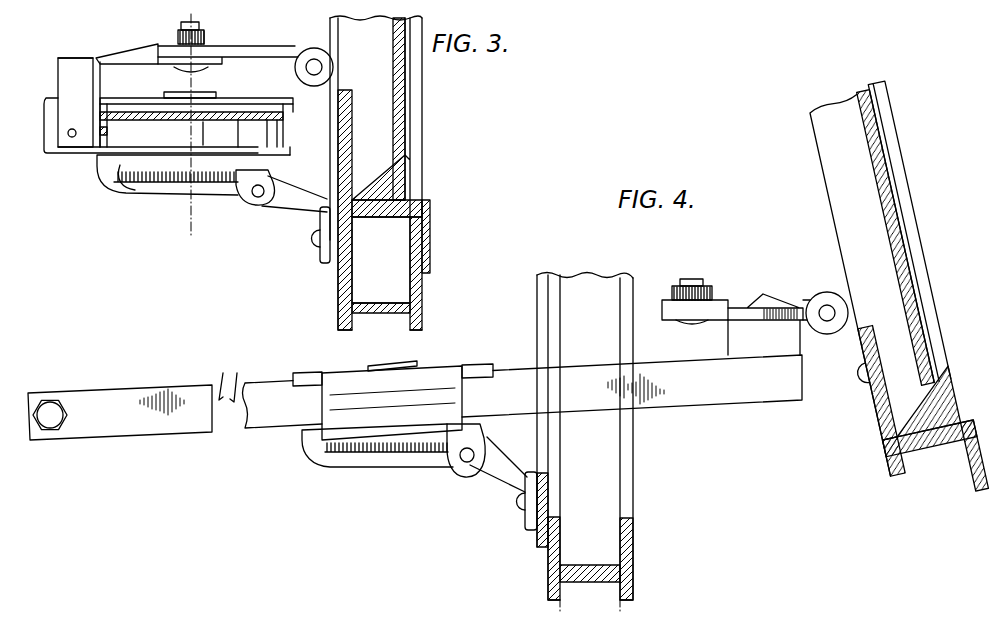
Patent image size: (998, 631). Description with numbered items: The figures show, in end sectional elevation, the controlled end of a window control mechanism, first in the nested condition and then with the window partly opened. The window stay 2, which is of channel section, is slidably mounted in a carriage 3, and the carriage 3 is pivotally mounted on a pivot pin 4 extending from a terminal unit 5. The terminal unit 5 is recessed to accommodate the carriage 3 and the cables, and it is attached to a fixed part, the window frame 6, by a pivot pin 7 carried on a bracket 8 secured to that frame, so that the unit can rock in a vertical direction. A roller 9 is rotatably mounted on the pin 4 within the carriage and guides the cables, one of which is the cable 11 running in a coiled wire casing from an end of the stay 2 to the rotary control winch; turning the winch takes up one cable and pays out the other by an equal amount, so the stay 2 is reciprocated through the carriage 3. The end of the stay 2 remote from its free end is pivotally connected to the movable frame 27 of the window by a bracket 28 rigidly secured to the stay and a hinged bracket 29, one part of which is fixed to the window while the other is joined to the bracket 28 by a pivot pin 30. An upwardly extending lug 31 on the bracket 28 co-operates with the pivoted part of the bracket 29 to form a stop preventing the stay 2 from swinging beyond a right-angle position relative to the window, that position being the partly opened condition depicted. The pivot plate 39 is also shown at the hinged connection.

In FIG. 4, the window stay 2 is at (95, 422).
In FIG. 3, the carriage 3 is at (57, 153).
In FIG. 4, the carriage 3 is at (343, 418).
In FIG. 3, the pivot pin 4 is at (200, 96).
In FIG. 4, the pivot pin 4 is at (400, 365).
In FIG. 3, the terminal unit 5 is at (174, 184).
In FIG. 4, the terminal unit 5 is at (358, 438).
In FIG. 3, the window frame 6 is at (340, 262).
In FIG. 4, the window frame 6 is at (543, 540).
In FIG. 3, the pivot pin 7 is at (259, 199).
In FIG. 4, the pivot pin 7 is at (462, 459).
In FIG. 3, the bracket 8 is at (309, 211).
In FIG. 4, the bracket 8 is at (515, 478).
In FIG. 3, the roller 9 is at (146, 150).
In FIG. 4, the cable 11 is at (234, 375).
In FIG. 3, the movable frame 27 is at (353, 119).
In FIG. 4, the movable frame 27 is at (878, 442).
In FIG. 3, the bracket 28 is at (80, 58).
In FIG. 4, the bracket 28 is at (744, 309).
In FIG. 4, the hinged bracket 29 is at (802, 300).
In FIG. 3, the pivot pin 30 is at (204, 27).
In FIG. 4, the pivot pin 30 is at (700, 285).
In FIG. 3, the lug 31 is at (142, 52).
In FIG. 4, the lug 31 is at (762, 294).
In FIG. 3, the pivot plate arm 39 is at (272, 47).